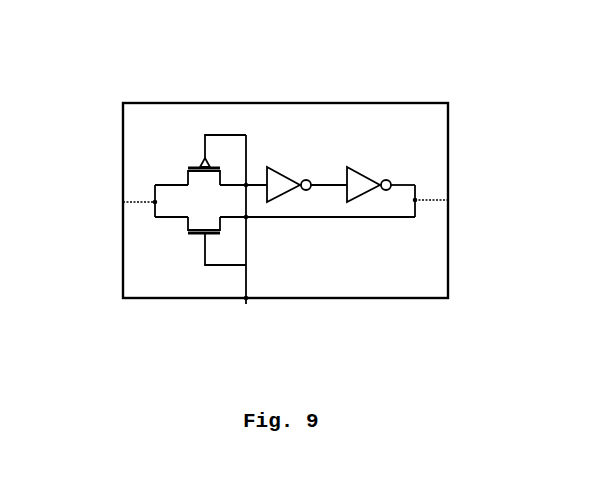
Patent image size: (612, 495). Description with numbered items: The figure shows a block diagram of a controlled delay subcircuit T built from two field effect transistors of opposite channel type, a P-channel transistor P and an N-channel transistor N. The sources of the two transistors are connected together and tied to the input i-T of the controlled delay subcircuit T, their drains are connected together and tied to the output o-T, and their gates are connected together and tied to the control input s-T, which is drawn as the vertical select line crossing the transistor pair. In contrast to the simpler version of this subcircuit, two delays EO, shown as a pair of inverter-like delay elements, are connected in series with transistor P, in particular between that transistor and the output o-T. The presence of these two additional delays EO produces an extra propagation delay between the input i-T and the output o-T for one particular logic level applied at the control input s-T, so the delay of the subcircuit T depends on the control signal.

The controlled delay subcircuit T is at (246, 103).
The field effect transistor of P channel type P is at (201, 165).
The field effect transistor of N channel type N is at (203, 236).
The delays EO is at (281, 177).
The input of the controlled delay subcircuit i-T is at (121, 202).
The output of the controlled delay subcircuit o-T is at (448, 200).
The control input of the controlled delay subcircuit s-T is at (246, 300).